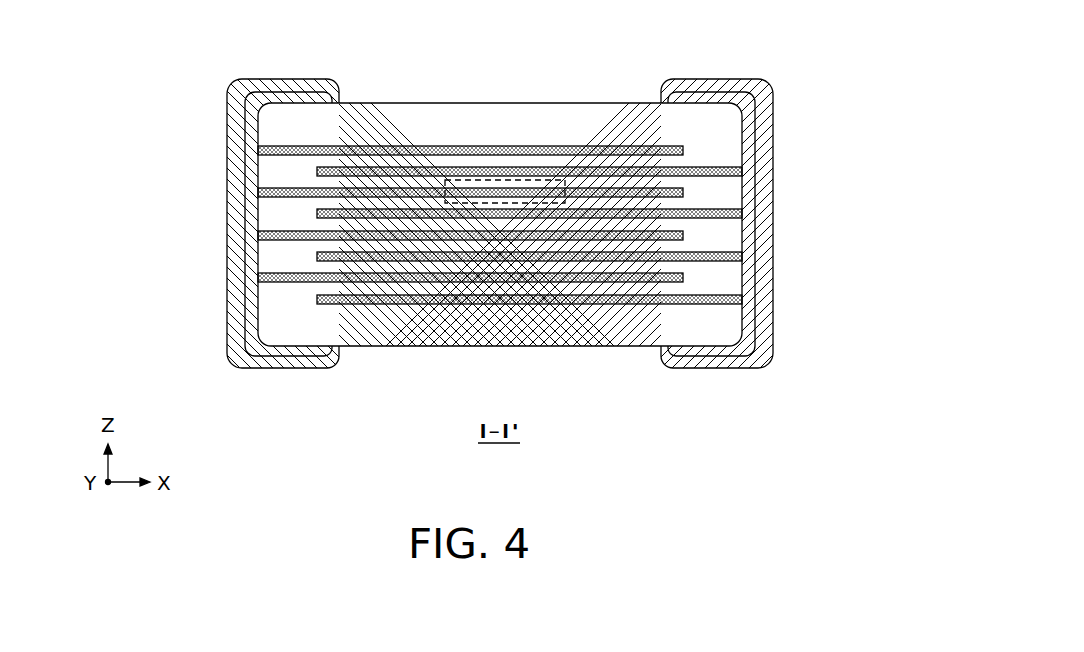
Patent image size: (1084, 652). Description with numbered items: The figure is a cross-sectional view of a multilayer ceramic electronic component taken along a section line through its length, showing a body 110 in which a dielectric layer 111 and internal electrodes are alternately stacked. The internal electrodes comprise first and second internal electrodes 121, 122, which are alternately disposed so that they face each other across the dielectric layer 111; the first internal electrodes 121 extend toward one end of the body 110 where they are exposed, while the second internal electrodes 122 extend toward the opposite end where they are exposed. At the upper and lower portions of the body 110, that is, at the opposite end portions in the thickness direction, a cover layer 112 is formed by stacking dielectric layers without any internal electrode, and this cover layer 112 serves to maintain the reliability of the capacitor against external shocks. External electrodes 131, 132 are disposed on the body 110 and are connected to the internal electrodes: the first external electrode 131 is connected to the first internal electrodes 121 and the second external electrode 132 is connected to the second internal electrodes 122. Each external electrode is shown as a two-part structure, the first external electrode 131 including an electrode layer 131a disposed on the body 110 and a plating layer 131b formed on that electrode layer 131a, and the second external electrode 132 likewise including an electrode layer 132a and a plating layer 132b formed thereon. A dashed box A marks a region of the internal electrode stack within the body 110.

The body 110 is at (432, 103).
The dielectric layer 111 is at (369, 182).
The cover layer 112 is at (497, 122).
The first internal electrode 121 is at (567, 147).
The second internal electrode 122 is at (633, 170).
The first external electrode 131 is at (319, 220).
The electrode layer 131a is at (234, 137).
The plating layer 131b is at (237, 183).
The second external electrode 132 is at (721, 220).
The electrode layer 132a is at (755, 120).
The plating layer 132b is at (760, 173).
The region A is at (500, 205).